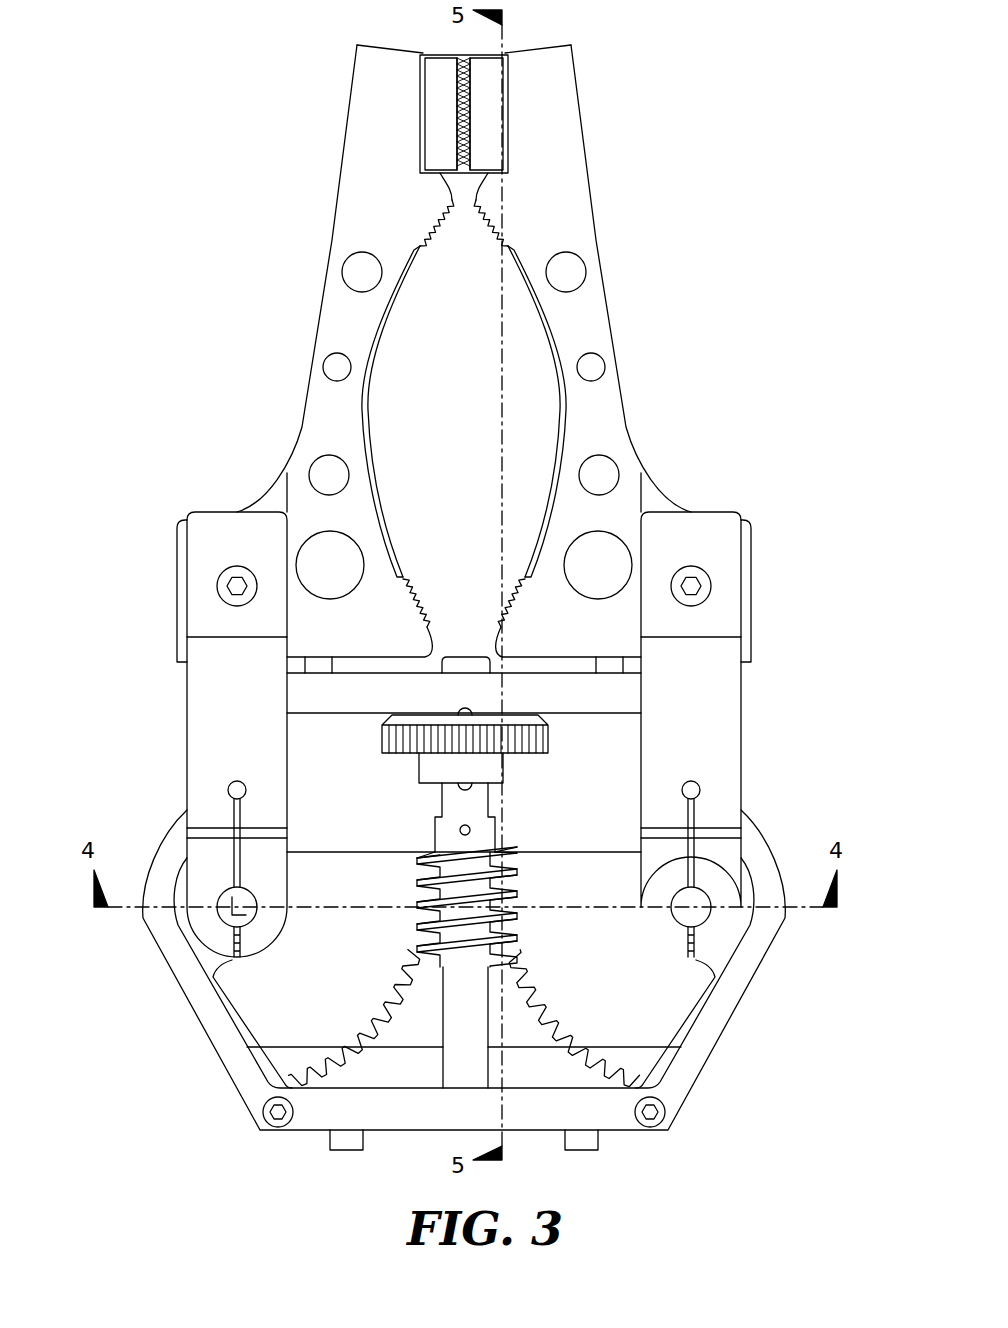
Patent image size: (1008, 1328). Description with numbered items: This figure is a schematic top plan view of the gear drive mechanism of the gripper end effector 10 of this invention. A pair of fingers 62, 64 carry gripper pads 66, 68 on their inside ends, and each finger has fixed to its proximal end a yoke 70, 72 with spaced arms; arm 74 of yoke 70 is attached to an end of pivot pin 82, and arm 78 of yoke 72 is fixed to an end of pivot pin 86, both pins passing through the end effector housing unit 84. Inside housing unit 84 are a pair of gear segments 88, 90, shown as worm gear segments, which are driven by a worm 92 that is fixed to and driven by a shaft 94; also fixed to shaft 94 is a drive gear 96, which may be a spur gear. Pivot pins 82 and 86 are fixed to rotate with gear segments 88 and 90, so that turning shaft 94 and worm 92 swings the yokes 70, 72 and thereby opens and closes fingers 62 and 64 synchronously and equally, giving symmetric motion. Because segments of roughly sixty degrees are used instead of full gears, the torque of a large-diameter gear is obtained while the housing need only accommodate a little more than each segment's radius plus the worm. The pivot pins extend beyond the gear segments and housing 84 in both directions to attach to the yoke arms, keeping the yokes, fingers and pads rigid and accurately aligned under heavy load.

The gripping tool 10 is at (650, 209).
The finger 62 is at (345, 317).
The finger 64 is at (578, 317).
The gripper pad 66 is at (440, 105).
The gripper pad 68 is at (487, 107).
The yoke 70 is at (217, 542).
The yoke 72 is at (709, 542).
The arm 74 is at (235, 750).
The arm 78 is at (700, 750).
The pivot pin 82 is at (228, 916).
The end effector housing unit 84 is at (192, 1052).
The pivot pin 86 is at (700, 916).
The gear segment 88 is at (300, 1014).
The gear segment 90 is at (599, 1012).
The worm 92 is at (445, 865).
The shaft 94 is at (475, 800).
The drive gear 96 is at (392, 735).